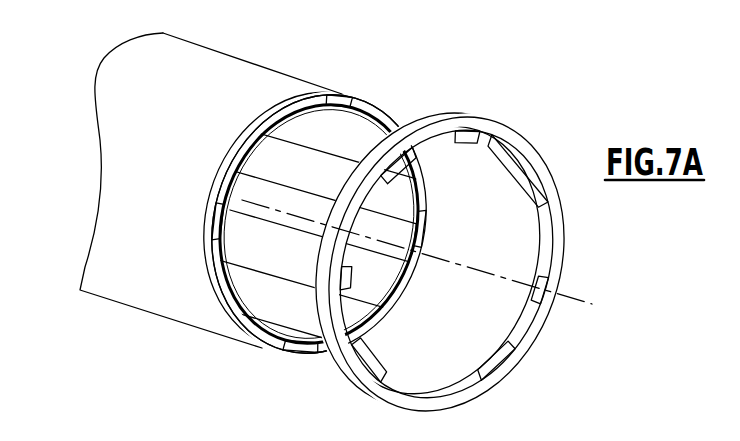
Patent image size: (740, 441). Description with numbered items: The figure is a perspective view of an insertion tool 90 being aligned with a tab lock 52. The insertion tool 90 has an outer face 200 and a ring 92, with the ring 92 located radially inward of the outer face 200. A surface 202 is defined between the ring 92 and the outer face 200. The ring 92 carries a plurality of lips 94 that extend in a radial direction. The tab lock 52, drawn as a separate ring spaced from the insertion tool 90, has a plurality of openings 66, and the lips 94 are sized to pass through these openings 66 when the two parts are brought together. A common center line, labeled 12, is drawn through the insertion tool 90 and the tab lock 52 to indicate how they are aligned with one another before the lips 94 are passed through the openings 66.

The insertion tool 90 is at (108, 213).
The ring 92 is at (228, 297).
The lips 94 is at (213, 233).
The outer face 200 is at (288, 88).
The surface 202 is at (254, 124).
The tab lock 52 is at (539, 132).
The openings 66 is at (464, 130).
The central axis 12 is at (500, 277).